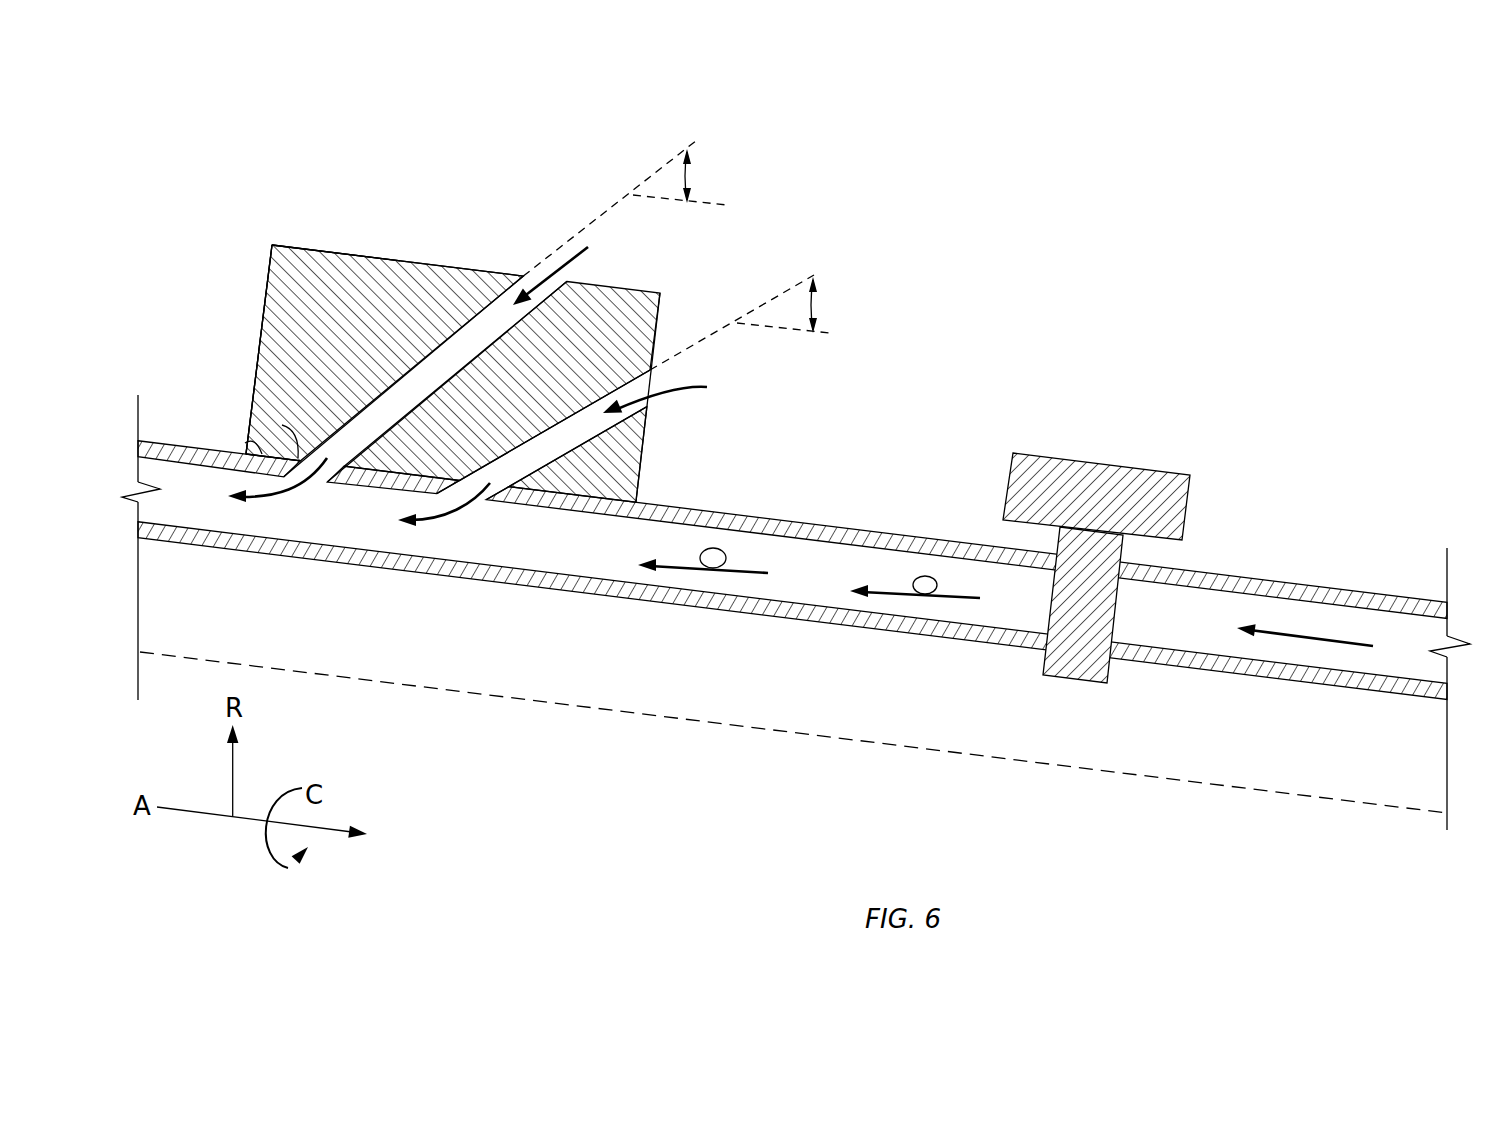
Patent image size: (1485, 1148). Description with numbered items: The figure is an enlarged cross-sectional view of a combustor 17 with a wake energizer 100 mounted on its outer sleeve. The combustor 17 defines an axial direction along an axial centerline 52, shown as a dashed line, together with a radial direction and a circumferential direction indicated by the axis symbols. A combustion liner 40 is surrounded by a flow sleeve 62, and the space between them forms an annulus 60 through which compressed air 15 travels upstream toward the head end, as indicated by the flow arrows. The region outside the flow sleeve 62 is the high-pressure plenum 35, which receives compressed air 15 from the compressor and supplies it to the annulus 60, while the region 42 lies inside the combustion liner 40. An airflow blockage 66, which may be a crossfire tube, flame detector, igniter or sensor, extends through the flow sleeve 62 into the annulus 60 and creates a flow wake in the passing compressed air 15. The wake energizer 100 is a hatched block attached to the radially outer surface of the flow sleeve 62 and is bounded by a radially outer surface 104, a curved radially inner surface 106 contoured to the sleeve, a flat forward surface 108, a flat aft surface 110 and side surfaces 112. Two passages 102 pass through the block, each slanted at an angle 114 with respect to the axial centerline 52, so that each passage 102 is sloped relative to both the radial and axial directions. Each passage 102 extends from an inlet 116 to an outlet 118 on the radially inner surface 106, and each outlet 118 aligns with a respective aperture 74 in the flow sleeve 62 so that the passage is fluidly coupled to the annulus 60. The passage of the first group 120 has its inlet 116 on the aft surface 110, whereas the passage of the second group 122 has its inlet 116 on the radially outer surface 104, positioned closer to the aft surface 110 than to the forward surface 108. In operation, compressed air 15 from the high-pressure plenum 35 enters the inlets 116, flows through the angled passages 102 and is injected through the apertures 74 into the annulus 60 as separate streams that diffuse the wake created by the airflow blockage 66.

The combustor 17 is at (148, 163).
The compressed air 15 is at (690, 387).
The high-pressure plenum 35 is at (916, 167).
The combustion liner 40 is at (838, 617).
The inner region 42 is at (719, 851).
The axial centerline 52 is at (1200, 790).
The annulus 60 is at (831, 588).
The flow sleeve 62 is at (811, 523).
The airflow blockage 66 is at (1117, 625).
The aperture 74 is at (340, 477).
The wake energizer 100 is at (368, 282).
The passage 102 is at (515, 345).
The radially outer surface 104 is at (320, 248).
The radially inner surface 106 is at (248, 444).
The forward surface 108 is at (260, 302).
The aft surface 110 is at (660, 330).
The side surfaces 112 is at (303, 282).
The angle 114 is at (690, 177).
The inlet 116 is at (588, 280).
The outlet 118 is at (263, 452).
The first group of passages 120 is at (600, 455).
The second group of passages 122 is at (462, 323).